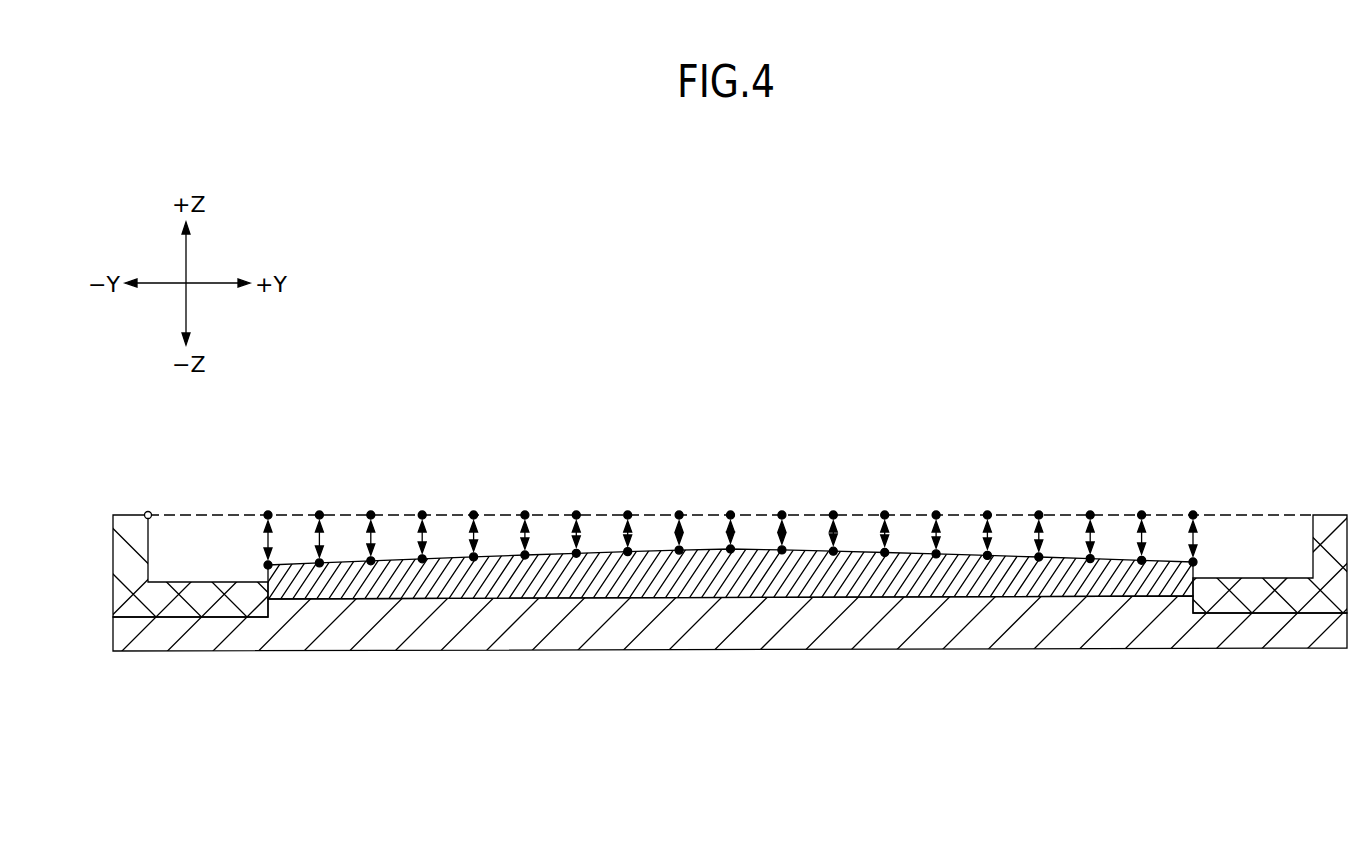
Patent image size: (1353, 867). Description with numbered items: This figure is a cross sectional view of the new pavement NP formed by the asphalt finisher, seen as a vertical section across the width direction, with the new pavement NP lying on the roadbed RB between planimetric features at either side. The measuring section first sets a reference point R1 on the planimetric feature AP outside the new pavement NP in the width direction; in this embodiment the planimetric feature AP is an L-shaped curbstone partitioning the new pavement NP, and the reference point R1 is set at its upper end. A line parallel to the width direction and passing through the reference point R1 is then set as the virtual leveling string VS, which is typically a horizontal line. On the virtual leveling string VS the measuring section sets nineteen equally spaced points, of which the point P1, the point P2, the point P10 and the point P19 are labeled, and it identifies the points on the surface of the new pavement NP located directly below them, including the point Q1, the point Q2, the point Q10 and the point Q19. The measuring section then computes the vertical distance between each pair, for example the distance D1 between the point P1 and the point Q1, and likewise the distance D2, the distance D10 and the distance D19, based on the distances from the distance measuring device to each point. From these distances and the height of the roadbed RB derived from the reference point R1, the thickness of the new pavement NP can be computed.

The planimetric feature AP is at (125, 515).
The roadbed RB is at (1278, 628).
The new pavement NP is at (1062, 578).
The virtual leveling string VS is at (1113, 510).
The reference point R1 is at (146, 500).
The point P1 is at (267, 512).
The point P2 is at (318, 512).
The point P10 is at (730, 512).
The point P19 is at (1193, 512).
The point Q1 is at (270, 568).
The point Q2 is at (320, 566).
The point Q10 is at (732, 550).
The point Q19 is at (1194, 564).
The distance D1 is at (285, 540).
The distance D2 is at (336, 539).
The distance D10 is at (750, 533).
The distance D19 is at (1217, 538).